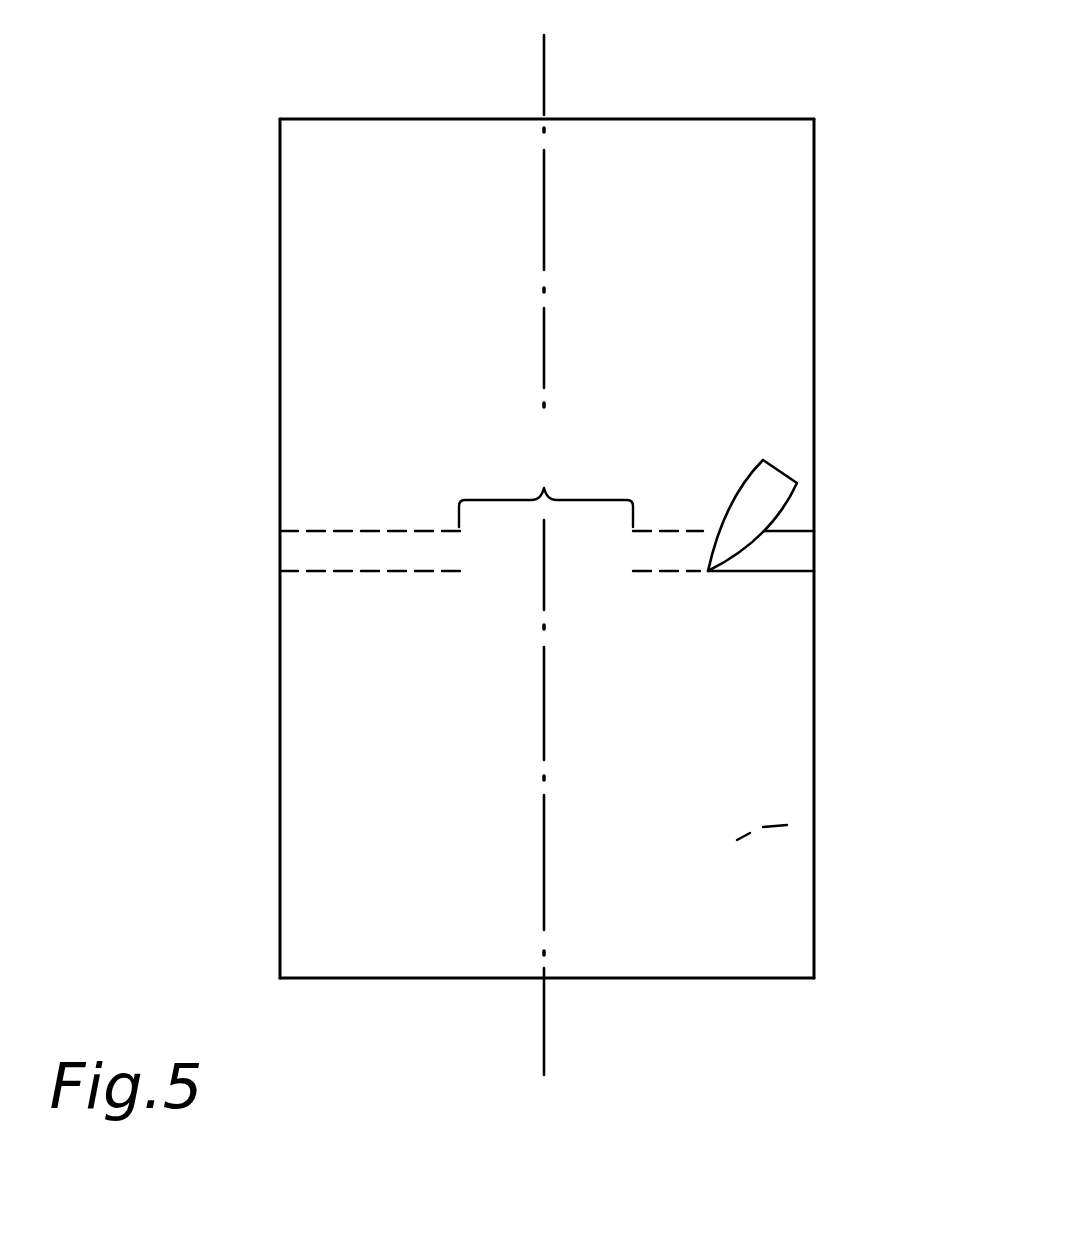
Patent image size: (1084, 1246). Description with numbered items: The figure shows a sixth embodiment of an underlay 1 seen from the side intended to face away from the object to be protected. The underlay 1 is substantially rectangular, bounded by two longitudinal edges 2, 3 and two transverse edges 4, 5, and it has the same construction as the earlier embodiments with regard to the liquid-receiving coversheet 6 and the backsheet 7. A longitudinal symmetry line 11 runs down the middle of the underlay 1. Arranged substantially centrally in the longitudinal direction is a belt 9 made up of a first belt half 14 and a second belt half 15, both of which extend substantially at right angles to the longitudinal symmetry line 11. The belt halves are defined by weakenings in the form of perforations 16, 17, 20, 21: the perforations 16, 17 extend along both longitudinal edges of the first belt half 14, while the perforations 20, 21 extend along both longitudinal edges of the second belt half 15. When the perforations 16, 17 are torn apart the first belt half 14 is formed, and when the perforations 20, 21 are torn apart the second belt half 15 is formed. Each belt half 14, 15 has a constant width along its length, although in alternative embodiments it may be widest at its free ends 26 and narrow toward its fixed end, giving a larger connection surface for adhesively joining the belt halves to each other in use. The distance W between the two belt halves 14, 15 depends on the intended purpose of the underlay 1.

The underlay 1 is at (499, 533).
The longitudinal edge 2 is at (815, 331).
The longitudinal edge 3 is at (280, 327).
The transverse edge 4 is at (495, 119).
The transverse edge 5 is at (423, 979).
The liquid-receiving coversheet 6 is at (728, 705).
The backsheet 7 is at (797, 825).
The belt 9 is at (408, 548).
The longitudinal symmetry line 11 is at (545, 1039).
The first belt half 14 is at (768, 548).
The second belt half 15 is at (303, 551).
The perforation 16 is at (665, 531).
The perforation 17 is at (692, 572).
The perforation 20 is at (357, 530).
The perforation 21 is at (335, 572).
The free end 26 is at (305, 549).
The distance between the two belt halves W is at (546, 482).